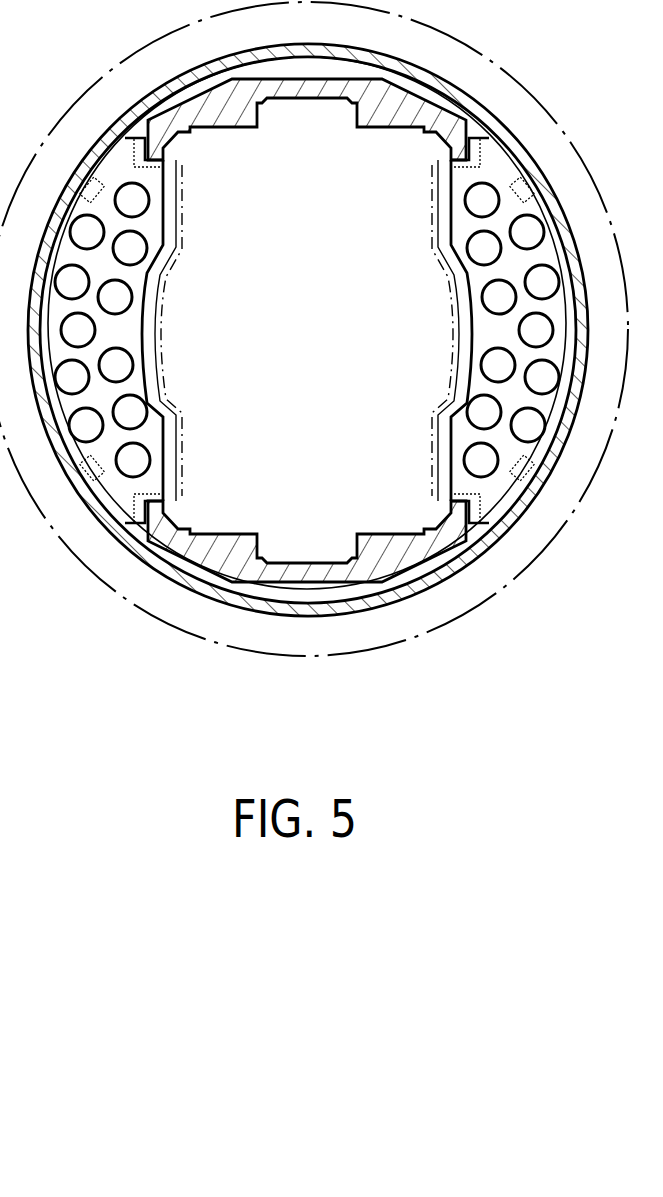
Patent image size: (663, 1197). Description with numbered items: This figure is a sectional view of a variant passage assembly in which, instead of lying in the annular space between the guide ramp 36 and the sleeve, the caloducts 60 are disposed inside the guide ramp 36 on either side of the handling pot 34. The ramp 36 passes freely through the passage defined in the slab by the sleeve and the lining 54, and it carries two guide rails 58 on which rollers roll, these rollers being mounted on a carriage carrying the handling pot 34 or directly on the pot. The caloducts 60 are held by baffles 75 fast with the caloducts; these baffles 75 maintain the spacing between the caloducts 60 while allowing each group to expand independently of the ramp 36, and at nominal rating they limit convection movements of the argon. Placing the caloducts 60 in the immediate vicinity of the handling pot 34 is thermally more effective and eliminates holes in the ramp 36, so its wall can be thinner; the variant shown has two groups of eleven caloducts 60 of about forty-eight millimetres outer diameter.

The handling pot 34 is at (326, 359).
The guide ramp 36 is at (128, 545).
The lining 54 is at (460, 617).
The guide rails 58 is at (307, 100).
The caloducts 60 is at (132, 263).
The baffles 75 is at (140, 384).